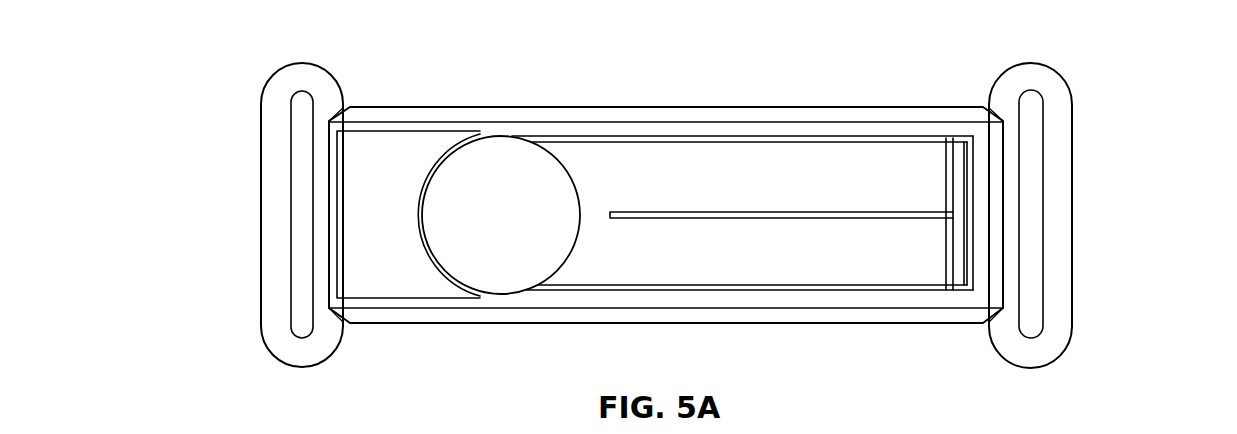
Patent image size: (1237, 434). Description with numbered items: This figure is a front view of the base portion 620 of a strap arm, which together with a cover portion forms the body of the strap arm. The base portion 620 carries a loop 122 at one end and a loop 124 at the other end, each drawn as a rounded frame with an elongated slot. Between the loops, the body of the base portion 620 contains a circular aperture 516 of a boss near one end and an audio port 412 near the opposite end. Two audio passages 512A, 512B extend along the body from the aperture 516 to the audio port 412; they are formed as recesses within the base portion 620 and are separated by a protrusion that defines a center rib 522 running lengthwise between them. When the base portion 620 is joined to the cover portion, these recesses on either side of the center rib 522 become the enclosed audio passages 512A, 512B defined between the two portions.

The loop 122 is at (279, 221).
The loop 124 is at (1057, 272).
The audio port 412 is at (968, 187).
The audio passage 512A is at (717, 170).
The audio passage 512B is at (768, 273).
The aperture 516 is at (494, 232).
The center rib 522 is at (874, 214).
The base portion 620 is at (378, 339).